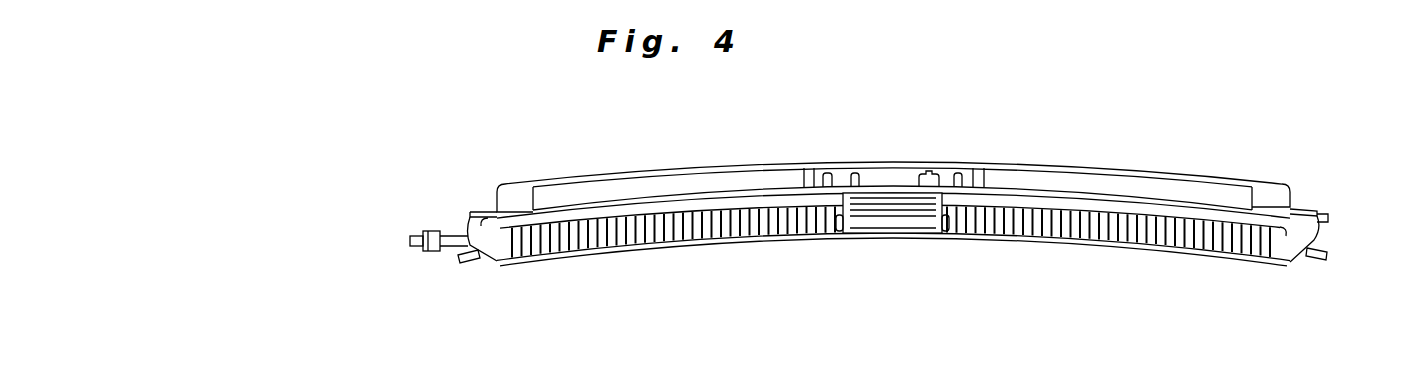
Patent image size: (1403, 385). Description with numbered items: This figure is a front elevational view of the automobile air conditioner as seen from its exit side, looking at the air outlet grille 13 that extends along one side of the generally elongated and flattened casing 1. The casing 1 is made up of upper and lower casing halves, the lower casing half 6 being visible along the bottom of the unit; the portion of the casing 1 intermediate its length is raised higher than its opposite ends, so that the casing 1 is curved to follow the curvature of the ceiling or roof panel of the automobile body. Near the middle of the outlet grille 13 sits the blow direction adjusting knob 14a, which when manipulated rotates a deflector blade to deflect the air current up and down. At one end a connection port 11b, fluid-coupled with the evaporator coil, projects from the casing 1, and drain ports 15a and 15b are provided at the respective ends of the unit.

The casing 1 is at (1203, 188).
The lower casing half 6 is at (1282, 245).
The air outlet grille 13 is at (694, 228).
The blow direction adjusting knob 14a is at (842, 230).
The connection port 11b is at (455, 250).
The drain port 15a is at (477, 253).
The drain port 15b is at (1312, 253).